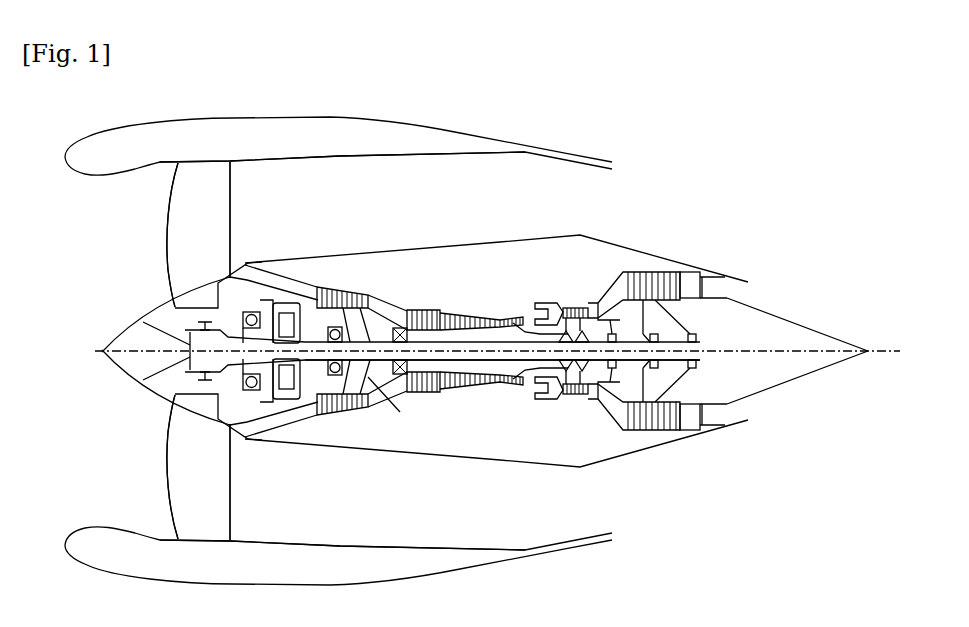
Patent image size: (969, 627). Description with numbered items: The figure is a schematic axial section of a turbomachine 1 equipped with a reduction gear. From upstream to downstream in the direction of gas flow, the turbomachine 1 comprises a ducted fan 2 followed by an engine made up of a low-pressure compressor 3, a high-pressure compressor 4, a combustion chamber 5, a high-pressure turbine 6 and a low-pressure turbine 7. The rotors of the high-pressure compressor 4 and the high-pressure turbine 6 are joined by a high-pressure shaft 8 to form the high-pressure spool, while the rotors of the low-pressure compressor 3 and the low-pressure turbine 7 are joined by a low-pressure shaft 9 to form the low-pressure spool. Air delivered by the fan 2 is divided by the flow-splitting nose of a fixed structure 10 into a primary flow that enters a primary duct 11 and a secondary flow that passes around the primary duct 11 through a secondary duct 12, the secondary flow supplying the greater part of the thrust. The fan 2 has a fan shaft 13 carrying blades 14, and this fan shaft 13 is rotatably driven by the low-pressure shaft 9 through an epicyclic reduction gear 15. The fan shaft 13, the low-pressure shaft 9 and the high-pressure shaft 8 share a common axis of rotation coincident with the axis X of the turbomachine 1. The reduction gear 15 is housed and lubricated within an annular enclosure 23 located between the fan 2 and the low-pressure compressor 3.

The turbomachine 1 is at (120, 109).
The ducted fan 2 is at (158, 238).
The low-pressure compressor 3 is at (352, 272).
The high-pressure compressor 4 is at (446, 290).
The combustion chamber 5 is at (550, 293).
The high-pressure turbine 6 is at (580, 298).
The low-pressure turbine 7 is at (656, 262).
The high-pressure shaft 8 is at (536, 373).
The low-pressure shaft 9 is at (485, 378).
The fixed structure 10 is at (226, 266).
The primary duct 11 is at (370, 380).
The secondary duct 12 is at (441, 199).
The fan shaft 13 is at (143, 322).
The blades 14 is at (200, 192).
The epicyclic reduction gear 15 is at (247, 410).
The annular enclosure 23 is at (260, 278).
The axis X is at (887, 353).